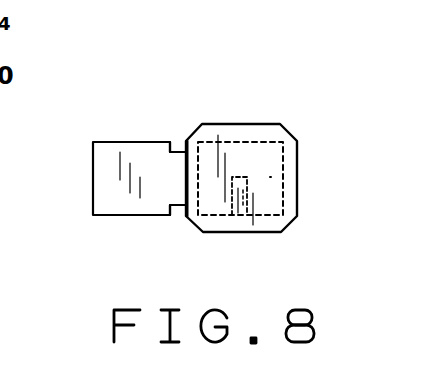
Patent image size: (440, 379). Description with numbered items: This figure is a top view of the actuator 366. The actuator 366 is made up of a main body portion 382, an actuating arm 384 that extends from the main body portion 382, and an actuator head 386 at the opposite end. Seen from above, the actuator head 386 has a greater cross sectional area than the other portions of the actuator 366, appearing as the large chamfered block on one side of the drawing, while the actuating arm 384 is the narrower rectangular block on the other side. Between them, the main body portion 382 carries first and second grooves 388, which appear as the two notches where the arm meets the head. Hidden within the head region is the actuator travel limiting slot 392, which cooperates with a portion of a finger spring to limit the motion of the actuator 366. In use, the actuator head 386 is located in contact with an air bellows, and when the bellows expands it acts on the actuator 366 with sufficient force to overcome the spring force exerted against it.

The actuator 366 is at (227, 95).
The main body portion 382 is at (284, 165).
The actuating arm 384 is at (108, 198).
The actuator head 386 is at (250, 133).
The first and second grooves 388 is at (171, 150).
The actuator travel limiting slot 392 is at (284, 205).